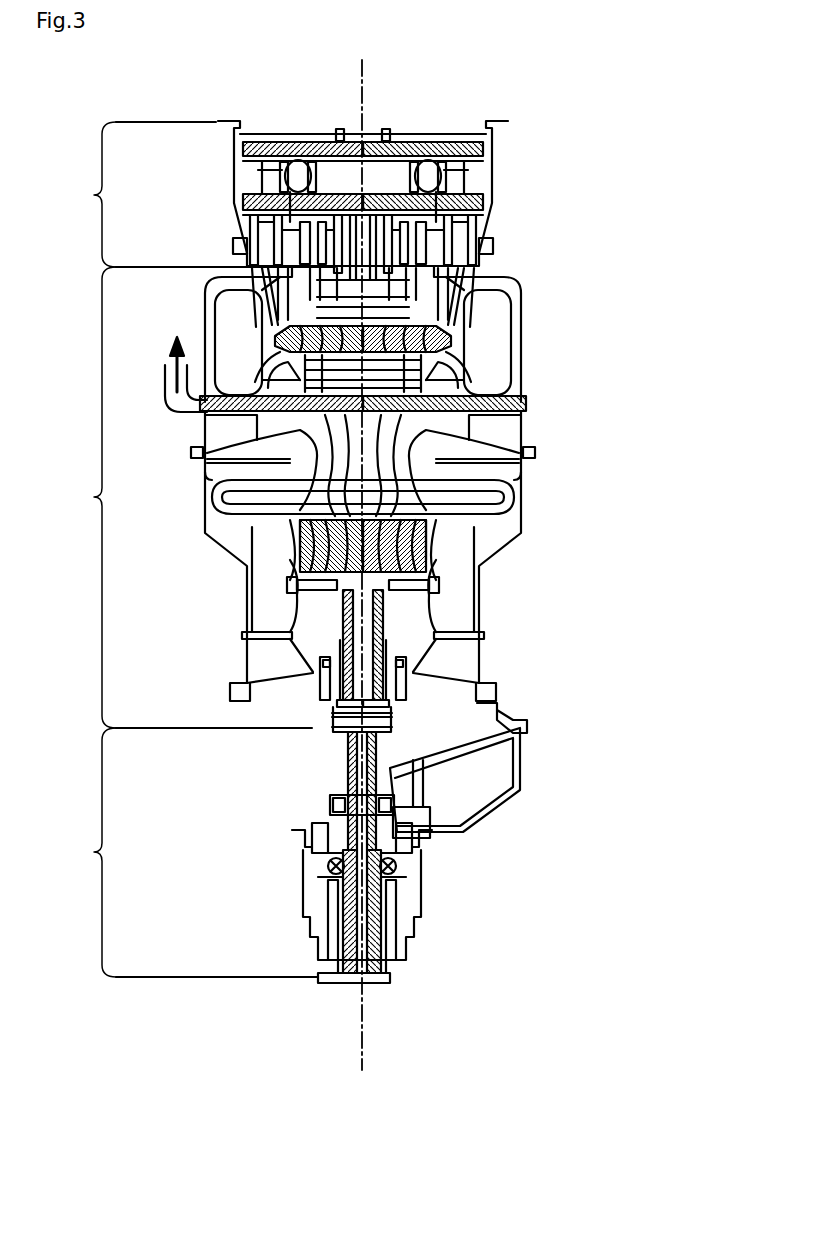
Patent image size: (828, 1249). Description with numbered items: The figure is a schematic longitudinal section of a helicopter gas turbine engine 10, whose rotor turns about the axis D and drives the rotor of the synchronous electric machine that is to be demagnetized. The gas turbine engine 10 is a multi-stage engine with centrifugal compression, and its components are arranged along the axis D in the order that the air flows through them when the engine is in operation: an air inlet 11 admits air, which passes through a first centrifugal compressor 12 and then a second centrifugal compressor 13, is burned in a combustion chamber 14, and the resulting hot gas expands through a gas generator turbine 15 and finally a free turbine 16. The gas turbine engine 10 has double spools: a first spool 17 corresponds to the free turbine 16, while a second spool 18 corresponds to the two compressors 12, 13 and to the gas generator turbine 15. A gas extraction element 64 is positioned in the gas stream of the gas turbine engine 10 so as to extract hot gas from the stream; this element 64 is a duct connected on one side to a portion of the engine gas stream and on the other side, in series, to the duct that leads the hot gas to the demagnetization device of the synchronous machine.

The gas turbine engine 10 is at (647, 761).
The air inlet 11 is at (245, 651).
The first centrifugal compressor 12 is at (440, 556).
The second centrifugal compressor 13 is at (300, 440).
The combustion chamber 14 is at (246, 343).
The gas generator turbine 15 is at (440, 386).
The free turbine 16 is at (484, 234).
The first spool 17 is at (199, 549).
The second spool 18 is at (90, 497).
The gas extraction element 64 is at (173, 418).
The axis D is at (360, 1052).